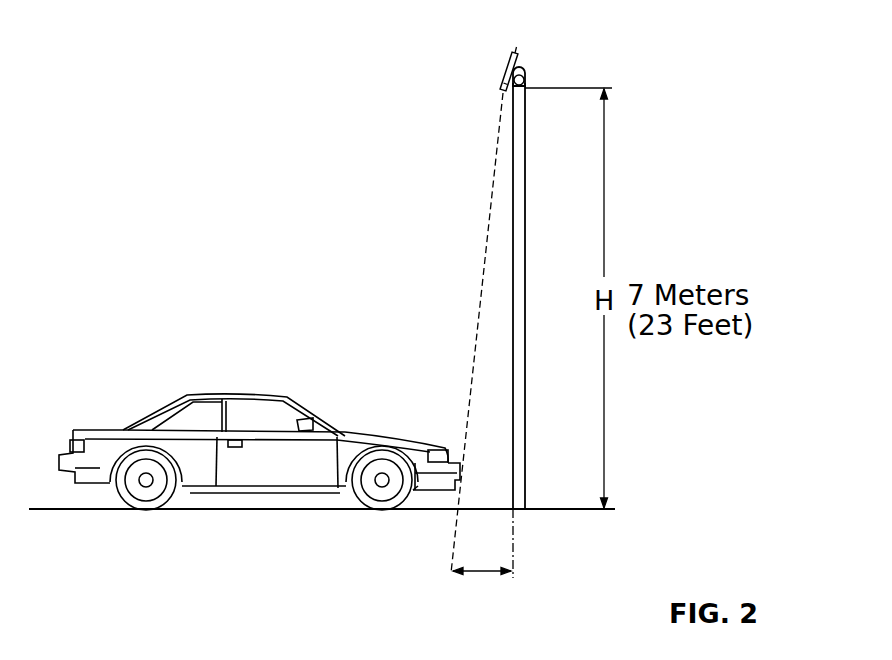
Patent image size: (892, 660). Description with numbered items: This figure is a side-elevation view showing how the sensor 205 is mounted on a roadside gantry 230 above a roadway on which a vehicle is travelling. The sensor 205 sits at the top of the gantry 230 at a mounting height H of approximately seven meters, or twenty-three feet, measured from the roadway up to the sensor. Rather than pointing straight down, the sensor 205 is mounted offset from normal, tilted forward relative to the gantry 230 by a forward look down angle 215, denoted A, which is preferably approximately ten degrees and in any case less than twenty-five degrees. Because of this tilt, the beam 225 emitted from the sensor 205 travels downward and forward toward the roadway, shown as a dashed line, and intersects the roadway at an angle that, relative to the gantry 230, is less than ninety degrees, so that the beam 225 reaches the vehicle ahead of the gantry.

The sensor 205 is at (500, 72).
The gantry 230 is at (537, 102).
The beam 225 is at (475, 254).
The forward look down angle 215 is at (502, 584).